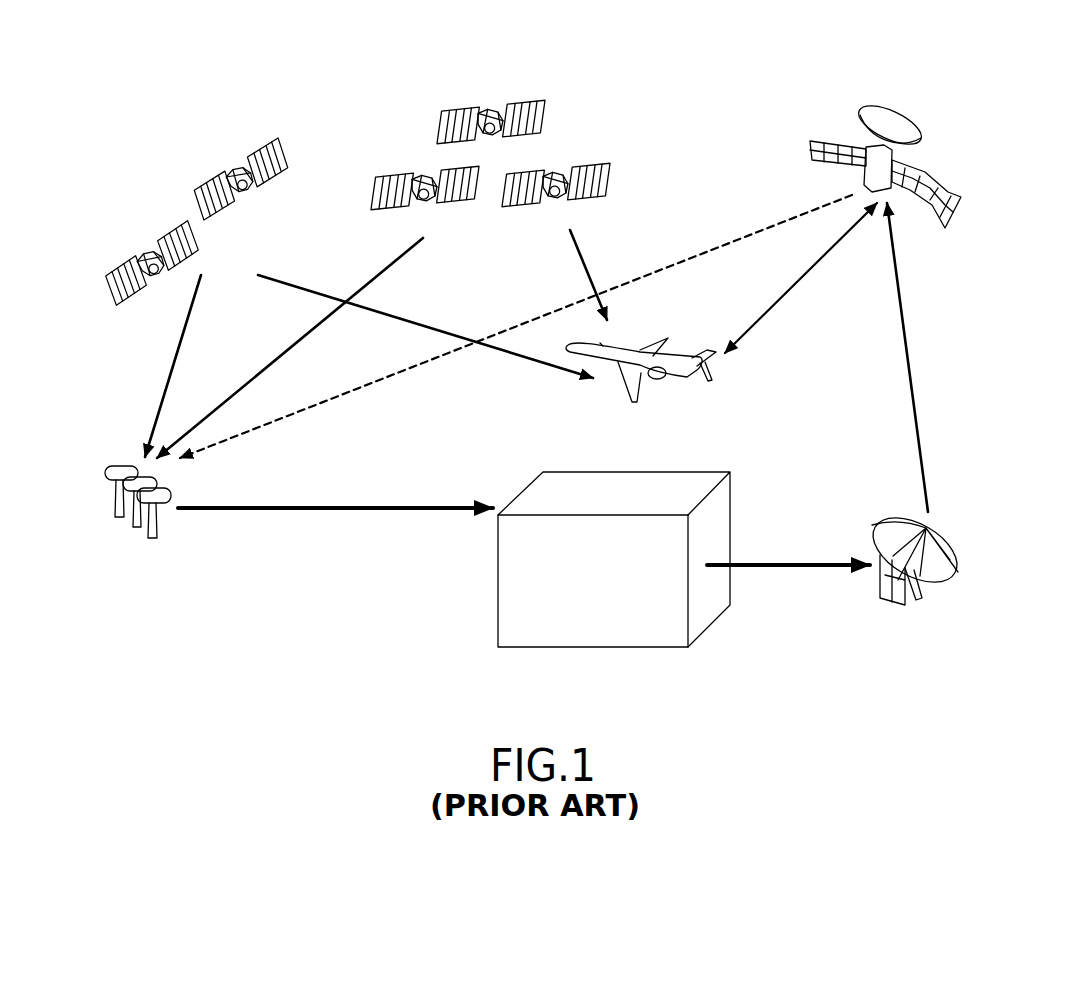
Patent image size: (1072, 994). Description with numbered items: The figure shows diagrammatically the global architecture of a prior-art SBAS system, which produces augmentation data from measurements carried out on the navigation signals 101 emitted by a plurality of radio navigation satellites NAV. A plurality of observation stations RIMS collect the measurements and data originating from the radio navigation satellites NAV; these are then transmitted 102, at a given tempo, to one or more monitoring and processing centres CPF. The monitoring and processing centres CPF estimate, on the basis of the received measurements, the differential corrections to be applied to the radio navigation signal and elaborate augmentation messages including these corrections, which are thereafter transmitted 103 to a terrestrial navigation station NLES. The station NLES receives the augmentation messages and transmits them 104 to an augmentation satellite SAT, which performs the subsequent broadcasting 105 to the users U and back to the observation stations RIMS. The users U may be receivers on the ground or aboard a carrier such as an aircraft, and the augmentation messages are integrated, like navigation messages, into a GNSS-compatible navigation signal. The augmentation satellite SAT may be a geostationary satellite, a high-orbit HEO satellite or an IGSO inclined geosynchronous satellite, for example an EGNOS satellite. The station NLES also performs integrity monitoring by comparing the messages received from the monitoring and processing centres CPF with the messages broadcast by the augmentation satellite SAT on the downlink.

The radio navigation satellites NAV is at (423, 123).
The augmentation satellite SAT is at (930, 153).
The users U is at (651, 385).
The observation stations RIMS is at (123, 527).
The monitoring and processing centres CPF is at (598, 630).
The terrestrial navigation station NLES is at (935, 593).
The navigation signals 101 is at (583, 267).
The transmission of measurements 102 is at (352, 510).
The transmission of augmentation messages 103 is at (780, 570).
The transmission to augmentation satellite 104 is at (905, 325).
The broadcasting of augmentation messages 105 is at (812, 255).